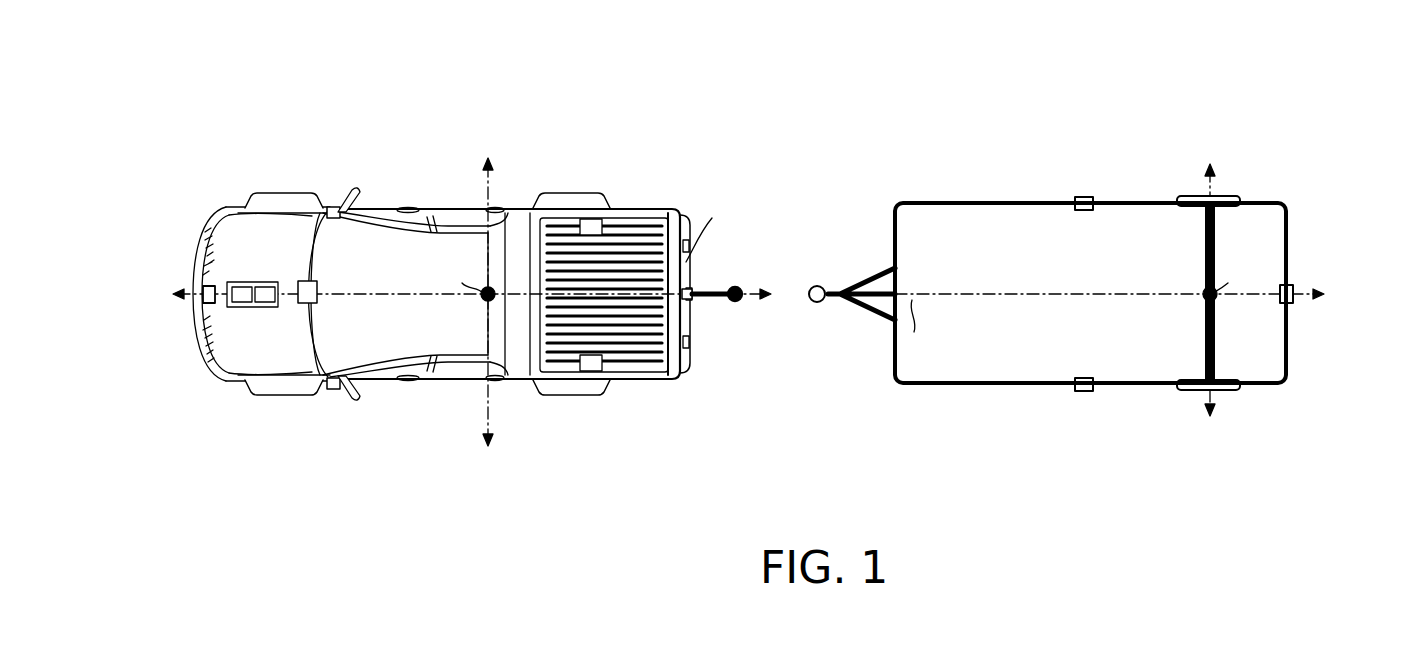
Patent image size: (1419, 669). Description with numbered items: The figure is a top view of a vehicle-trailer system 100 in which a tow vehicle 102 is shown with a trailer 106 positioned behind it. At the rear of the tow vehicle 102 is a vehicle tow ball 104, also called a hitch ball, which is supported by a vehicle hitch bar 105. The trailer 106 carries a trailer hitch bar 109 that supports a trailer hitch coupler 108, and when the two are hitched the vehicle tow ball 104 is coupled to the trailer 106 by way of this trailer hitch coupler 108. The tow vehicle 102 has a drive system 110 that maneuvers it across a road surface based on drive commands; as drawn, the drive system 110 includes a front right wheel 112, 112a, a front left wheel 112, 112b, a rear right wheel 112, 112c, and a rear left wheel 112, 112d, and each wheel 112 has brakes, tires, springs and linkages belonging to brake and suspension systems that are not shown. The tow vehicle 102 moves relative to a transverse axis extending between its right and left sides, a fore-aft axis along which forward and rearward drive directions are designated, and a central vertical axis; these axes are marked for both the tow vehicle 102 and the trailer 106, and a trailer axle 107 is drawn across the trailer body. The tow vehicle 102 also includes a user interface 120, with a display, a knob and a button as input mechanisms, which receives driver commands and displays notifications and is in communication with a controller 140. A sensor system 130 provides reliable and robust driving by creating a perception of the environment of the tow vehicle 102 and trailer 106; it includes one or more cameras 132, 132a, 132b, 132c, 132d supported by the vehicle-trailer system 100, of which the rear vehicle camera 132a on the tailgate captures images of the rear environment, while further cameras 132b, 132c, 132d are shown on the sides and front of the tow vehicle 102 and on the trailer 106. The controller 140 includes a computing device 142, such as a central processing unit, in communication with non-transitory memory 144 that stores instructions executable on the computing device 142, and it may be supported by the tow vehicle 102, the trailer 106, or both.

The vehicle-trailer system 100 is at (797, 45).
The tow vehicle 102 is at (251, 191).
The vehicle tow ball 104 is at (740, 301).
The vehicle hitch bar 105 is at (692, 300).
The trailer 106 is at (1069, 180).
The trailer axle 107 is at (1205, 242).
The trailer hitch coupler 108 is at (822, 285).
The trailer hitch bar 109 is at (858, 282).
The drive system 110 is at (732, 294).
The wheel 112 is at (732, 294).
The front right wheel 112a is at (284, 194).
The front left wheel 112b is at (276, 396).
The rear right wheel 112c is at (571, 193).
The rear left wheel 112d is at (572, 395).
The user interface 120 is at (320, 284).
The sensor system 130 is at (743, 323).
The camera 132 is at (743, 323).
The rear vehicle camera 132a is at (687, 307).
The camera 132b is at (343, 194).
The camera 132c is at (340, 394).
The camera 132d is at (200, 284).
The controller 140 is at (251, 282).
The computing device 142 is at (242, 306).
The non-transitory memory 144 is at (267, 305).